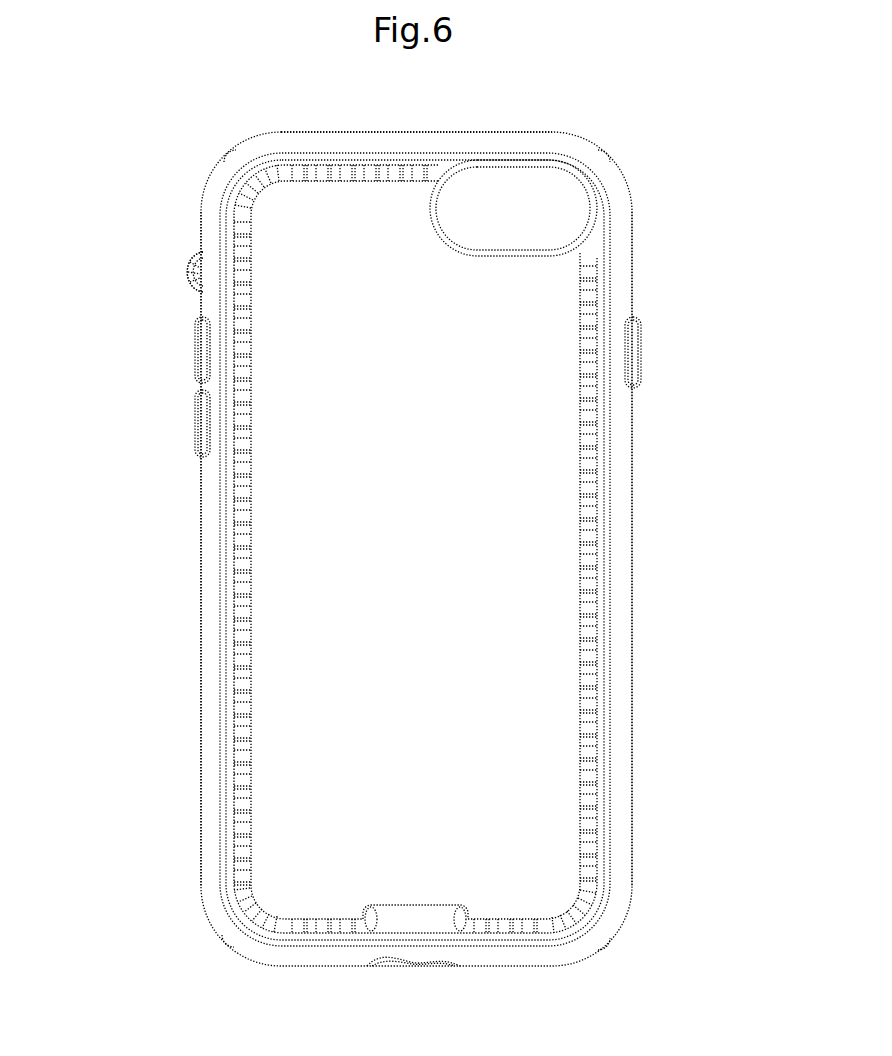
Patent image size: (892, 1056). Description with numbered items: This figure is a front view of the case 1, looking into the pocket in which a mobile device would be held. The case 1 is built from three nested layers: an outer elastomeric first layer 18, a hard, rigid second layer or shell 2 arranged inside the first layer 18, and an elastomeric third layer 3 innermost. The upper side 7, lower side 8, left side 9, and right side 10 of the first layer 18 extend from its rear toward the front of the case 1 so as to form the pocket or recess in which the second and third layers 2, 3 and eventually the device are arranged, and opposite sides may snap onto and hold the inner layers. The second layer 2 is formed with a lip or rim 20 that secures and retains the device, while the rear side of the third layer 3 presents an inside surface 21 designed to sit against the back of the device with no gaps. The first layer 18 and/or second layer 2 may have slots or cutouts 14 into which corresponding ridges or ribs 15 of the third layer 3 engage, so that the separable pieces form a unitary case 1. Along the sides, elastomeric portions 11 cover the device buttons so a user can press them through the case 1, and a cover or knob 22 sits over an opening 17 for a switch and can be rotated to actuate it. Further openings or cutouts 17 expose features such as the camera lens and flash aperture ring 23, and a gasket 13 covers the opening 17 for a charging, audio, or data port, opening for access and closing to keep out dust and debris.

The case 1 is at (160, 627).
The second layer or shell 2 is at (227, 790).
The third layer 3 is at (372, 805).
The upper side 7 is at (502, 128).
The lower side 8 is at (472, 962).
The left side 9 is at (203, 750).
The right side 10 is at (632, 745).
The portions covering buttons 11 is at (640, 350).
The gasket 13 is at (420, 922).
The slots or cutouts 14 is at (233, 148).
The ridges or ribs 15 is at (607, 153).
The openings or cutouts 17 is at (535, 207).
The first layer 18 is at (622, 471).
The lip or rim 20 is at (603, 686).
The inside surface 21 is at (455, 580).
The cover or knob 22 is at (190, 262).
The camera lens and/or flash aperture ring 23 is at (497, 253).